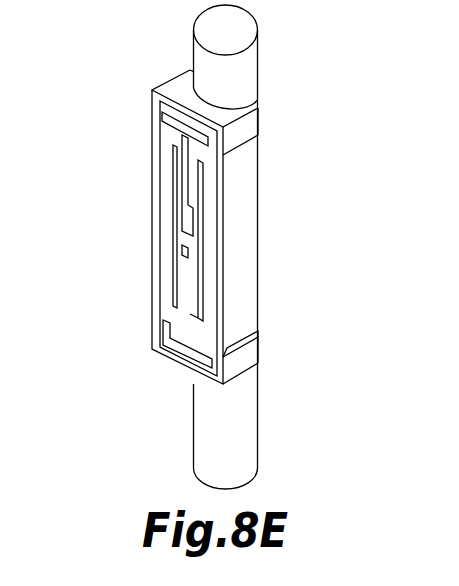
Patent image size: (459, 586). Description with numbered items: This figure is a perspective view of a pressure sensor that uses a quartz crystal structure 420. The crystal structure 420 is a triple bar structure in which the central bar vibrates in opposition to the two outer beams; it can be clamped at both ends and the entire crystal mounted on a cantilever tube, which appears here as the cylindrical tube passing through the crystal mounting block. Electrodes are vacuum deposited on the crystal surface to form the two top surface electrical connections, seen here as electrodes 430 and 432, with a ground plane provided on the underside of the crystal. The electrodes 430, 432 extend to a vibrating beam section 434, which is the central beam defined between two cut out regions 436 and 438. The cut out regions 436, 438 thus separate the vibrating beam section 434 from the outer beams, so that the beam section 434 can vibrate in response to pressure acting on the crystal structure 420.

The quartz crystal structure 420 is at (226, 183).
The electrode 430 is at (175, 106).
The electrode 432 is at (187, 368).
The vibrating beam section 434 is at (190, 246).
The cut out region 436 is at (175, 240).
The cut out region 438 is at (200, 314).